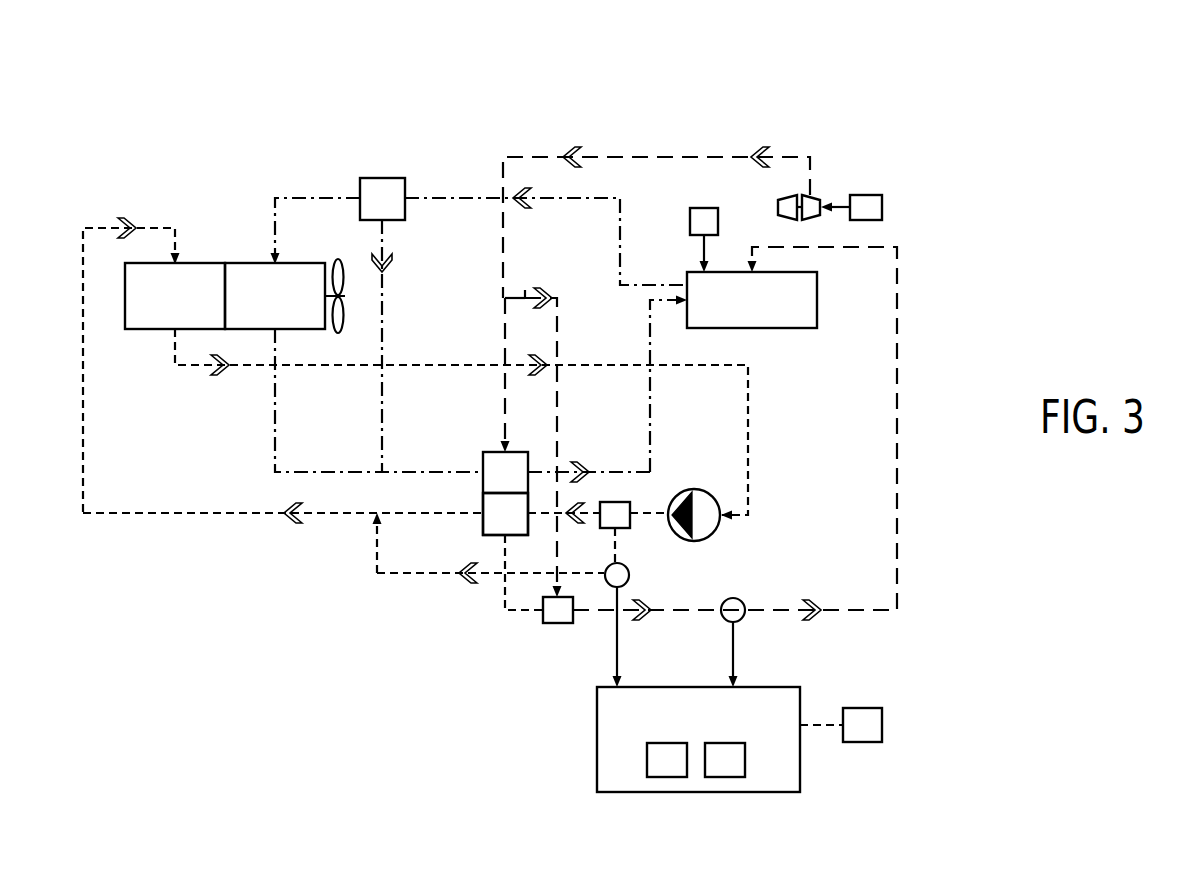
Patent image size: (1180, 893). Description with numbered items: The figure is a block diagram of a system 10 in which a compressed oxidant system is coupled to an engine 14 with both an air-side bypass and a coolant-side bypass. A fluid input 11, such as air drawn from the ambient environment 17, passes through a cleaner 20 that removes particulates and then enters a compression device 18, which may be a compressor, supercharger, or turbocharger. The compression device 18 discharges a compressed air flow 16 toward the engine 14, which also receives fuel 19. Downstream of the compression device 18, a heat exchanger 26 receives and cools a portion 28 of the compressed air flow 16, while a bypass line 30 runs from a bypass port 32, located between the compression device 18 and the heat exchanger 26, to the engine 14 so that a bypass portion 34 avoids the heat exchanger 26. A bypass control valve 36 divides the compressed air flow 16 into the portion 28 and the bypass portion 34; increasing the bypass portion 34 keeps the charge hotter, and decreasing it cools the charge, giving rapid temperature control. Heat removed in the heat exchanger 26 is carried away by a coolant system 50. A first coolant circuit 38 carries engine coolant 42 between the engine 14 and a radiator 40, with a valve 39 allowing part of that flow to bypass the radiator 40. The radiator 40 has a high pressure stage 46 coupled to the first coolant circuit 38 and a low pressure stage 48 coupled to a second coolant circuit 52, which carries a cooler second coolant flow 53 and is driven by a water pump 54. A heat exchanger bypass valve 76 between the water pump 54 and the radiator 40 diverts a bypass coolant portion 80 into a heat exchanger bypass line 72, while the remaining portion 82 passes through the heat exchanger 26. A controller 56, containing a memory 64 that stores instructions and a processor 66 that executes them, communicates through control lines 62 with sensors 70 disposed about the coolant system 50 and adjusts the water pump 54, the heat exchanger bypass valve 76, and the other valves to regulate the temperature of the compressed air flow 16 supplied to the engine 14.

The system 10 is at (365, 80).
The fluid input 11 is at (890, 207).
The engine 14 is at (817, 298).
The compressed air flow 16 is at (660, 157).
The ambient environment 17 is at (865, 188).
The compression device 18 is at (778, 200).
The fuel 19 is at (704, 208).
The cleaner 20 is at (861, 191).
The heat exchanger 26 is at (483, 525).
The portion 28 is at (505, 348).
The bypass line 30 is at (525, 290).
The bypass port 32 is at (490, 298).
The bypass portion 34 is at (552, 291).
The bypass control valve 36 is at (543, 618).
The first coolant circuit 38 is at (275, 198).
The valve 39 is at (382, 178).
The radiator 40 is at (137, 329).
The engine coolant 42 is at (620, 250).
The high pressure stage 46 is at (317, 198).
The low pressure stage 48 is at (175, 296).
The coolant system 50 is at (158, 178).
The second coolant circuit 52 is at (112, 513).
The second coolant flow 53 is at (540, 372).
The water pump 54 is at (692, 490).
The controller 56 is at (597, 740).
The control lines 62 is at (617, 628).
The memory 64 is at (667, 760).
The processor 66 is at (725, 760).
The sensors 70 is at (628, 580).
The heat exchanger bypass line 72 is at (390, 582).
The heat exchanger bypass valve 76 is at (617, 530).
The bypass coolant portion 80 is at (478, 585).
The portion 82 is at (578, 505).